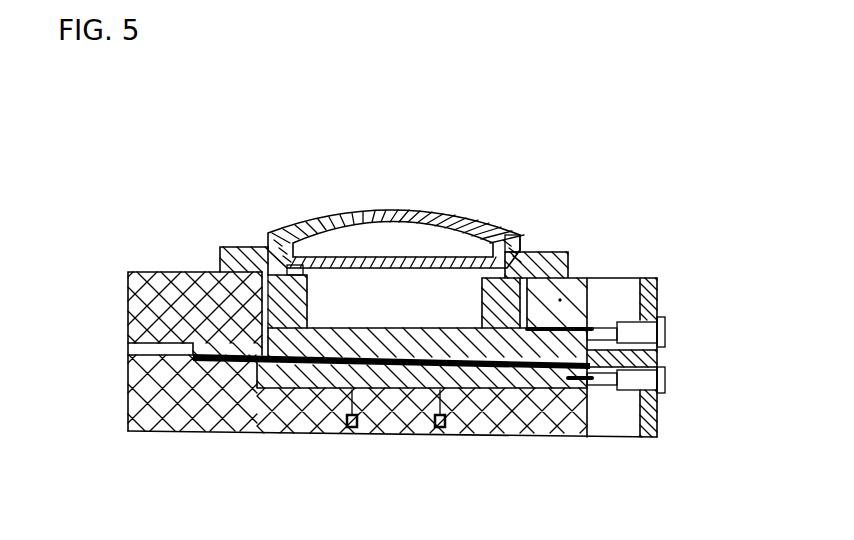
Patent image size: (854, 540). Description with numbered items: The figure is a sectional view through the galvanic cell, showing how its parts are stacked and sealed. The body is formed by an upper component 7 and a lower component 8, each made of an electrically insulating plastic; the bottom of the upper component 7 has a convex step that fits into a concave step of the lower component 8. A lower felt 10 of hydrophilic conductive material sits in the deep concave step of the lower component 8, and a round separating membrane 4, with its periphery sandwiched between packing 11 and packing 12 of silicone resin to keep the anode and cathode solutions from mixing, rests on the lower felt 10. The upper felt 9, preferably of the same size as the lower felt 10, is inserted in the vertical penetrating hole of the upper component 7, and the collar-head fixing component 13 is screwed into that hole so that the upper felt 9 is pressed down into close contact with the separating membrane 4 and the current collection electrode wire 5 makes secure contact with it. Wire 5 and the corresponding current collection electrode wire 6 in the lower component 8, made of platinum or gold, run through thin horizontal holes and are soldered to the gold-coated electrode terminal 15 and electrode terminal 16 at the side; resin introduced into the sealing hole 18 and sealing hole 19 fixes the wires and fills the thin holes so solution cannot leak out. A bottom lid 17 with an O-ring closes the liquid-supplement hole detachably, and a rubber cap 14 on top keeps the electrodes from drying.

The separating membrane 4 is at (128, 352).
The current collection electrode wire 5 is at (592, 325).
The current collection electrode wire 6 is at (600, 385).
The upper component 7 is at (128, 287).
The lower component 8 is at (128, 387).
The upper felt 9 is at (232, 318).
The lower felt 10 is at (315, 380).
The packing 11 is at (187, 290).
The packing 12 is at (222, 373).
The fixing component 13 is at (565, 250).
The cap 14 is at (487, 227).
The electrode terminal 15 is at (660, 318).
The electrode terminal 16 is at (667, 375).
The bottom lid 17 is at (412, 423).
The sealing hole 18 is at (625, 287).
The sealing hole 19 is at (607, 428).